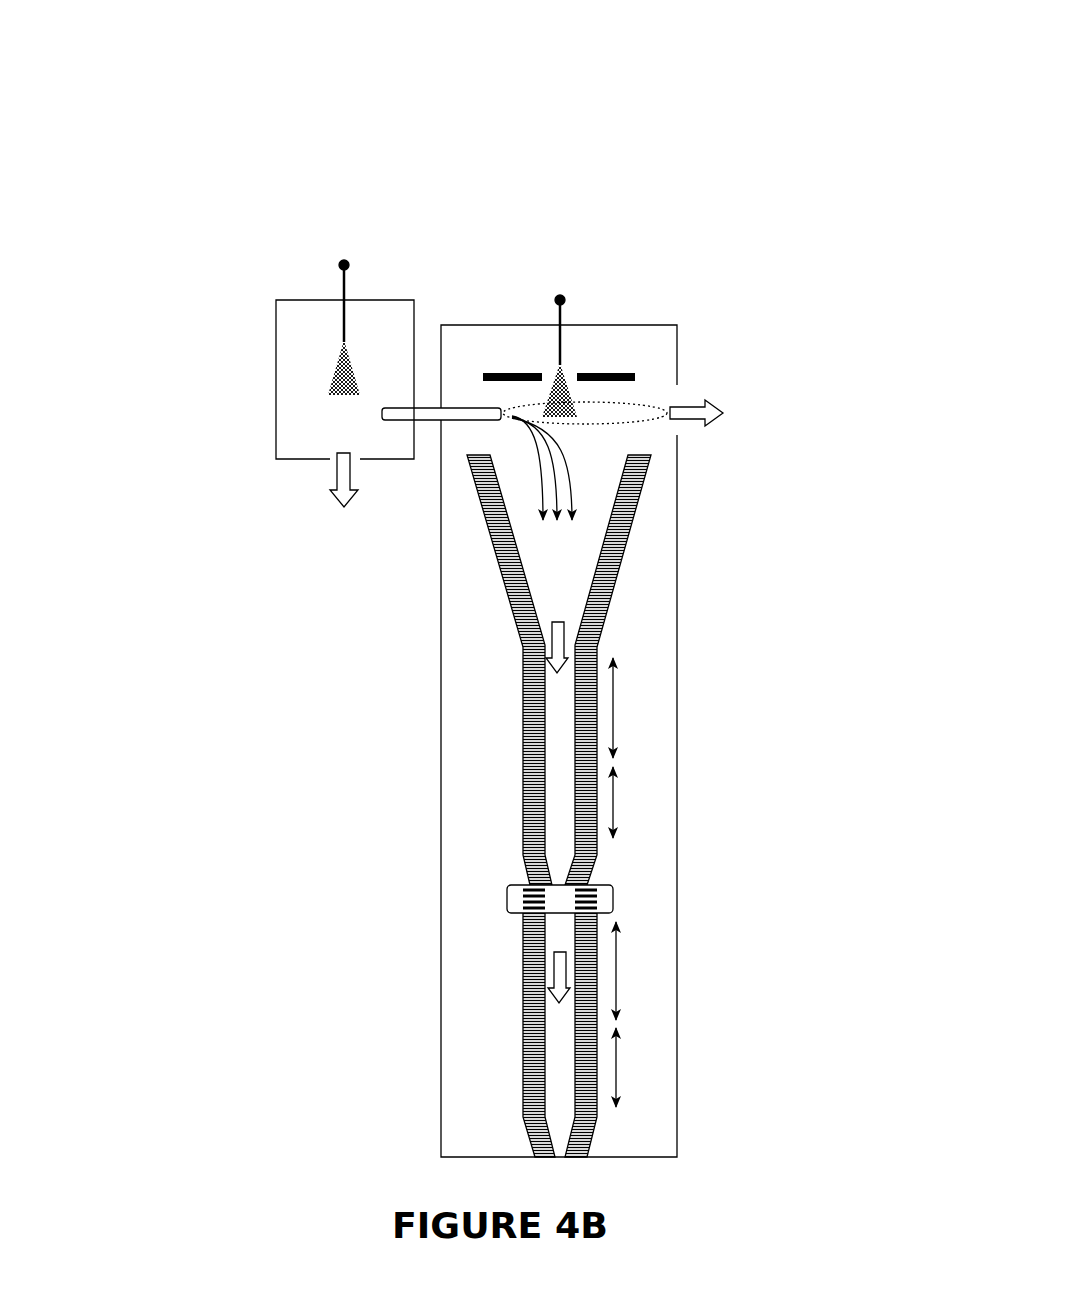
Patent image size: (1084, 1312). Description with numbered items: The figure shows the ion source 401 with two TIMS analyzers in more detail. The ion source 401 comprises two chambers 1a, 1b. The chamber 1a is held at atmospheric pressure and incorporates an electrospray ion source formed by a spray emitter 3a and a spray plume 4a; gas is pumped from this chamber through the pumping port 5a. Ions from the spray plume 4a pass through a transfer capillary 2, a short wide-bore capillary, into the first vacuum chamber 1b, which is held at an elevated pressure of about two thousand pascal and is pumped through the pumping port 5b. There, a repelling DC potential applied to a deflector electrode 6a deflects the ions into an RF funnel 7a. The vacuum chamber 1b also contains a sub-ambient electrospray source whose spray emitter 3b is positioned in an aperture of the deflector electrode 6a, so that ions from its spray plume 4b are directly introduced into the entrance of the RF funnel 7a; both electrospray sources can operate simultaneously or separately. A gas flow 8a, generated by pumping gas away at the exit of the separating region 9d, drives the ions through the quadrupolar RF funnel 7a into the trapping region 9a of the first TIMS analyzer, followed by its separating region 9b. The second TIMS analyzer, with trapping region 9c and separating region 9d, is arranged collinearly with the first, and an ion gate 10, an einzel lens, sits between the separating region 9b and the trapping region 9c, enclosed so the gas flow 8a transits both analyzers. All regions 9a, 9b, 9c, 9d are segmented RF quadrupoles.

The ion source 401 is at (520, 160).
The chamber 1a is at (288, 300).
The first vacuum chamber 1b is at (438, 727).
The transfer capillary 2 is at (423, 407).
The spray emitter 3a is at (337, 318).
The spray emitter 3b is at (555, 343).
The spray plume 4a is at (323, 398).
The spray plume 4b is at (583, 398).
The pumping port 5a is at (327, 472).
The pumping port 5b is at (685, 395).
The deflector electrode 6a is at (517, 368).
The RF funnel 7a is at (622, 577).
The gas flow 8a is at (550, 635).
The trapping region 9a is at (634, 708).
The separating region 9b is at (634, 802).
The trapping region 9c is at (638, 971).
The separating region 9d is at (639, 1067).
The ion gate 10 is at (497, 902).